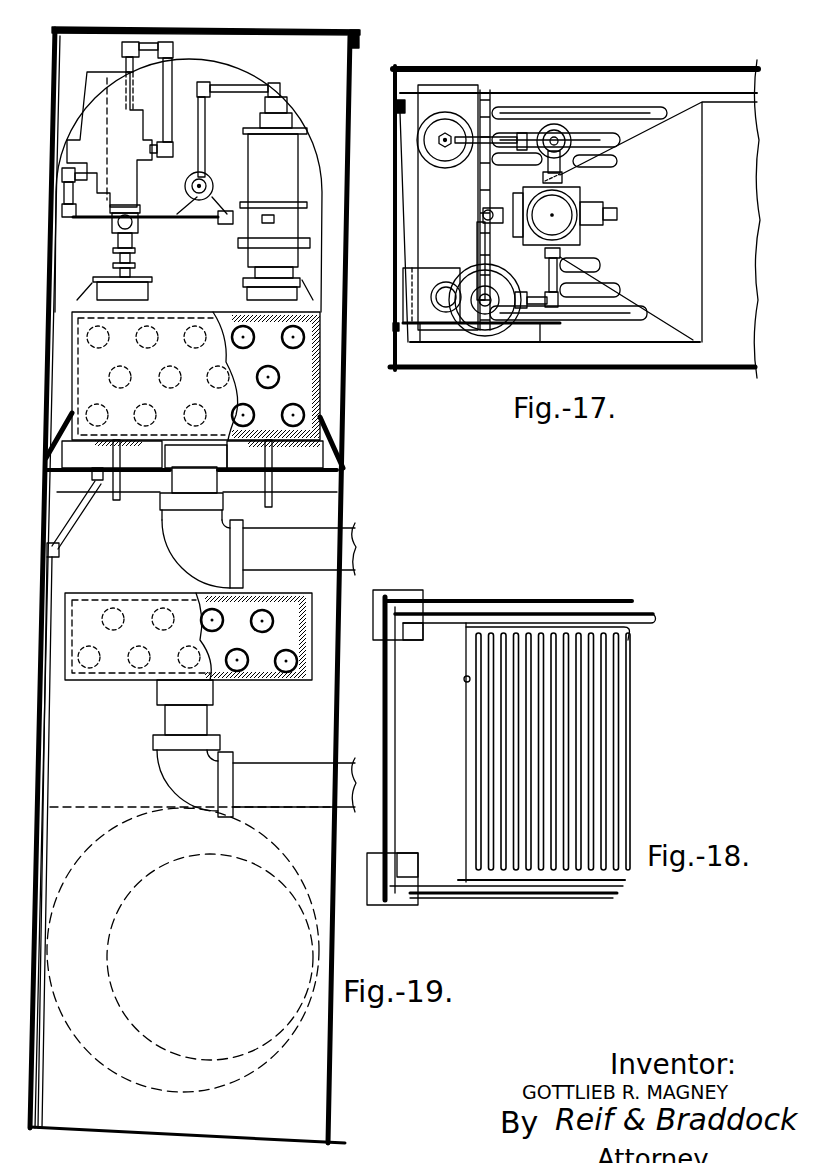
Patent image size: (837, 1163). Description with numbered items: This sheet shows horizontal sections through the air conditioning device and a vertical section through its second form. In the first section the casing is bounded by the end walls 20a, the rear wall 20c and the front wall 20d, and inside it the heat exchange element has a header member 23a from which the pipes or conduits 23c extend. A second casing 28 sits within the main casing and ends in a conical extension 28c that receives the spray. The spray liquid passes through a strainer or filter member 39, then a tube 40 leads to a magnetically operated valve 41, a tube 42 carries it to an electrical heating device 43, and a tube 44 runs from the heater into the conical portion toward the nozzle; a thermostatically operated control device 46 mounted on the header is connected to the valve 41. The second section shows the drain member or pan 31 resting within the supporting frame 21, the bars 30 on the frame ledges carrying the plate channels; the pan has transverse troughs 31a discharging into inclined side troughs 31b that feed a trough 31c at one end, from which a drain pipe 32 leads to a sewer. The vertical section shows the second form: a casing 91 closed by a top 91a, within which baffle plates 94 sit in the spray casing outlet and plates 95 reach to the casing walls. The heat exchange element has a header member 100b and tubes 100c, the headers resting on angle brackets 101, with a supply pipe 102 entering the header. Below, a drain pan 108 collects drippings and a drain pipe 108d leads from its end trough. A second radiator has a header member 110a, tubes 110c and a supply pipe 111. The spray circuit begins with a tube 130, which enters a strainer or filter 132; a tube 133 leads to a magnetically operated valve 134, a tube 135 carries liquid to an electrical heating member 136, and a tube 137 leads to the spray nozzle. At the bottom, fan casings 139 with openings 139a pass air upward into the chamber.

In FIG. 19, the top 91a is at (240, 32).
In FIG. 19, the magnetically operated valve 134 is at (97, 86).
In FIG. 19, the tube 133 is at (168, 76).
In FIG. 19, the tube 137 is at (205, 103).
In FIG. 19, the electrical heating member 136 is at (258, 165).
In FIG. 19, the strainer or filter 132 is at (137, 173).
In FIG. 19, the tube 135 is at (167, 220).
In FIG. 19, the tube 130 is at (123, 290).
In FIG. 19, the baffle plates 94 is at (350, 346).
In FIG. 19, the plates 95 is at (50, 430).
In FIG. 19, the tubes 100c is at (292, 376).
In FIG. 19, the header member 100b is at (332, 382).
In FIG. 19, the angle brackets 101 is at (106, 443).
In FIG. 19, the casing 91 is at (338, 489).
In FIG. 19, the drain pan 108 is at (148, 468).
In FIG. 19, the drain pipe 108d is at (68, 531).
In FIG. 19, the supply pipe 102 is at (268, 572).
In FIG. 19, the tubes 110c is at (258, 622).
In FIG. 19, the header member 110a is at (258, 676).
In FIG. 19, the supply pipe 111 is at (293, 775).
In FIG. 19, the fan casings 139 is at (245, 830).
In FIG. 19, the openings 139a is at (150, 870).
In FIG. 17, the rear wall 20c is at (545, 67).
In FIG. 18, the rear wall 20c is at (484, 600).
In FIG. 17, the strainer or filter member 39 is at (554, 122).
In FIG. 17, the pipes or conduits 23c is at (605, 140).
In FIG. 17, the casing 28 is at (742, 122).
In FIG. 17, the end walls 20a is at (397, 144).
In FIG. 18, the end walls 20a is at (385, 690).
In FIG. 17, the header member 23a is at (420, 184).
In FIG. 17, the tube 40 is at (452, 151).
In FIG. 17, the magnetically operated valve 41 is at (583, 193).
In FIG. 17, the tube 44 is at (471, 218).
In FIG. 17, the electrical heating device 43 is at (460, 278).
In FIG. 17, the thermostatically operated control device 46 is at (413, 268).
In FIG. 17, the tube 42 is at (559, 277).
In FIG. 17, the conical extension 28c is at (656, 334).
In FIG. 17, the front wall 20d is at (655, 375).
In FIG. 18, the front wall 20d is at (556, 898).
In FIG. 18, the bars 30 is at (657, 614).
In FIG. 18, the drain member or pan 31 is at (638, 646).
In FIG. 18, the troughs 31a is at (608, 696).
In FIG. 18, the troughs 31b is at (476, 626).
In FIG. 18, the supporting frame 21 is at (412, 641).
In FIG. 18, the drain pipe 32 is at (464, 681).
In FIG. 18, the trough 31c is at (466, 748).